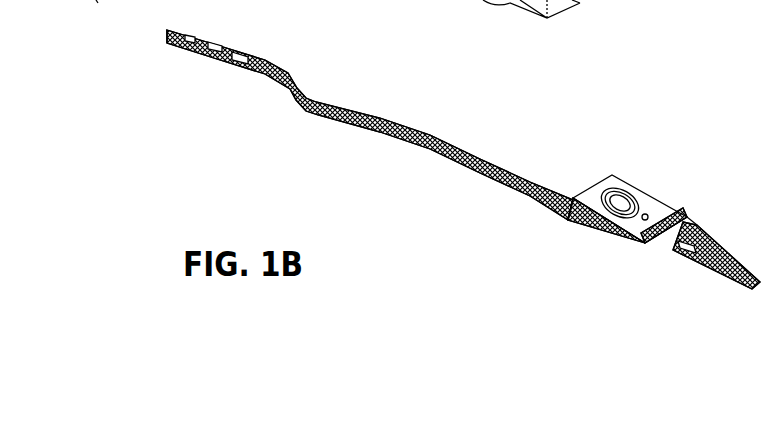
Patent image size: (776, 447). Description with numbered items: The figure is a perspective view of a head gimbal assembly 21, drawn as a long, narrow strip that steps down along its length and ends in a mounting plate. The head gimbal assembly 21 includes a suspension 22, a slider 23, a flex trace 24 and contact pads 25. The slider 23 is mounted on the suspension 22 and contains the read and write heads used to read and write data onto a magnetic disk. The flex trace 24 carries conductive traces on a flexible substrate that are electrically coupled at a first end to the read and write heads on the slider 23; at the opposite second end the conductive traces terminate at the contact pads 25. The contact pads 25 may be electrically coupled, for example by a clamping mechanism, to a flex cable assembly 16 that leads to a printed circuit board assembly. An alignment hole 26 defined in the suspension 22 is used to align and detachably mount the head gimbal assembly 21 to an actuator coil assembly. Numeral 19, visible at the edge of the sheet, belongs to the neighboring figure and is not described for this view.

The flex cable assembly 16 is at (95, 13).
The component of adjacent figure 19 is at (458, 3).
The head gimbal assembly 21 is at (630, 153).
The suspension 22 is at (607, 238).
The slider 23 is at (708, 278).
The flex trace 24 is at (382, 138).
The contact pads 25 is at (185, 48).
The alignment hole 26 is at (607, 187).